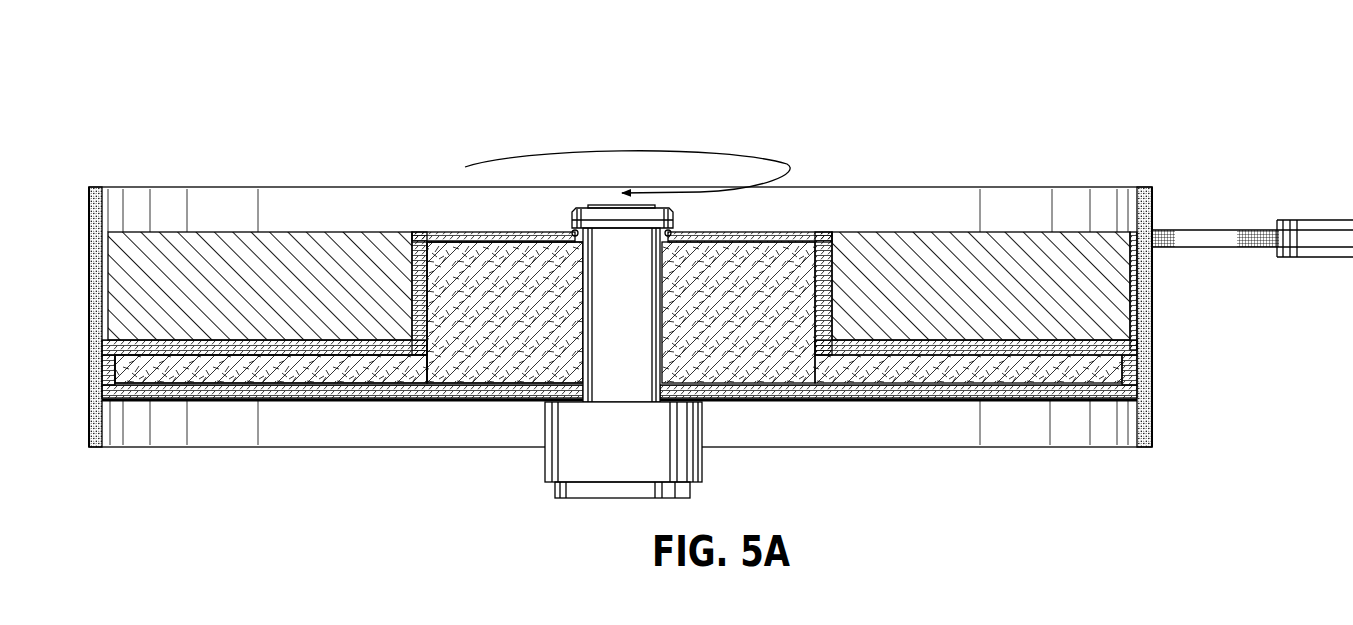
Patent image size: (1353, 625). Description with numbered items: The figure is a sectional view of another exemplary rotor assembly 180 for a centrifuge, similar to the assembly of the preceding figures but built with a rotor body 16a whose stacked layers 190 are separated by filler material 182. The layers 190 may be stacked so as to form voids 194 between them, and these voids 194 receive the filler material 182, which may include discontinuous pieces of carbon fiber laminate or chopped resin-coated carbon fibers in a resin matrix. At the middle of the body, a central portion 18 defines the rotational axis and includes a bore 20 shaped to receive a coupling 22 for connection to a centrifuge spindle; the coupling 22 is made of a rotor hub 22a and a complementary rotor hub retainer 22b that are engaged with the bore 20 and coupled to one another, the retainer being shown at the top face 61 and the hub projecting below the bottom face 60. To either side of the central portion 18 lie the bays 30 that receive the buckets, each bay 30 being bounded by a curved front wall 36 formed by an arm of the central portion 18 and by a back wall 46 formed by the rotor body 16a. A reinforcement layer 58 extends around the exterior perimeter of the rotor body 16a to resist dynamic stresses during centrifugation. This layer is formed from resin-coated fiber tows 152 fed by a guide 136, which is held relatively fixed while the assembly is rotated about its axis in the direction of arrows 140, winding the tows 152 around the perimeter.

The rotor body 16a is at (340, 405).
The central portion 18 is at (798, 232).
The bore 20 is at (651, 290).
The coupling 22 is at (607, 352).
The rotor hub 22a is at (543, 458).
The rotor hub retainer 22b is at (573, 213).
The bay 30 is at (237, 262).
The curved front wall 36 is at (406, 262).
The back wall 46 is at (121, 258).
The reinforcement layer 58 is at (87, 211).
The bottom face 60 is at (437, 401).
The top face 61 is at (440, 232).
The guide 136 is at (1328, 220).
The arrows 140 is at (608, 150).
The resin-coated fiber tows 152 is at (1212, 236).
The rotor assembly 180 is at (1120, 69).
The filler material 182 is at (275, 360).
The layers 190 is at (378, 382).
The voids 194 is at (192, 375).